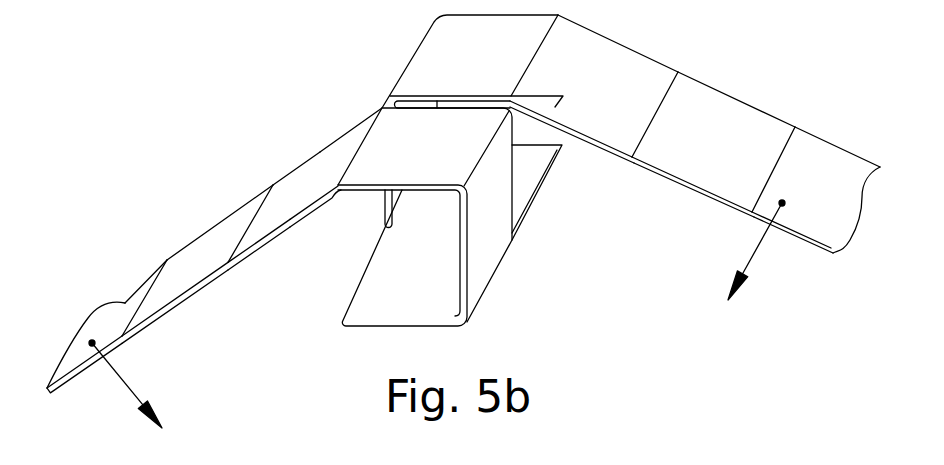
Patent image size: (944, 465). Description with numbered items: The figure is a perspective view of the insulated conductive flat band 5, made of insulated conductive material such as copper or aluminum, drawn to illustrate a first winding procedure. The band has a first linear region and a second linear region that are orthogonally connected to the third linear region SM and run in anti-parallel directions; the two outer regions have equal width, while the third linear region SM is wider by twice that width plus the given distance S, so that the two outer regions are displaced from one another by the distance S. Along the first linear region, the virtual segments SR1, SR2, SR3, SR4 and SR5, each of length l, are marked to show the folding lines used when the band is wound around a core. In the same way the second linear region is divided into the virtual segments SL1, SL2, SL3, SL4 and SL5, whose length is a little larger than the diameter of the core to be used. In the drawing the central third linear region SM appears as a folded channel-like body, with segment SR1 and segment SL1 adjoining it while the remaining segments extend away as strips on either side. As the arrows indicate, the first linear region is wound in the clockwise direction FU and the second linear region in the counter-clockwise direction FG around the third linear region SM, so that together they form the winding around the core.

The virtual segment of the first linear region SR2 is at (423, 63).
The virtual segment of the first linear region SR3 is at (628, 72).
The virtual segment of the first linear region SR4 is at (720, 108).
The virtual segment of the first linear region SR5 is at (812, 148).
The virtual segment of the first linear region SR1 is at (395, 195).
The given distance S is at (489, 102).
The third linear region SM is at (378, 288).
The virtual segment of the second linear region SL1 is at (495, 243).
The virtual segment of the second linear region SL2 is at (387, 125).
The virtual segment of the second linear region SL3 is at (305, 173).
The virtual segment of the second linear region SL4 is at (230, 227).
The virtual segment of the second linear region SL5 is at (122, 305).
The insulated conductive flat band 5 is at (123, 303).
The clockwise winding direction FU is at (531, 330).
The counter-clockwise winding direction FG is at (134, 402).